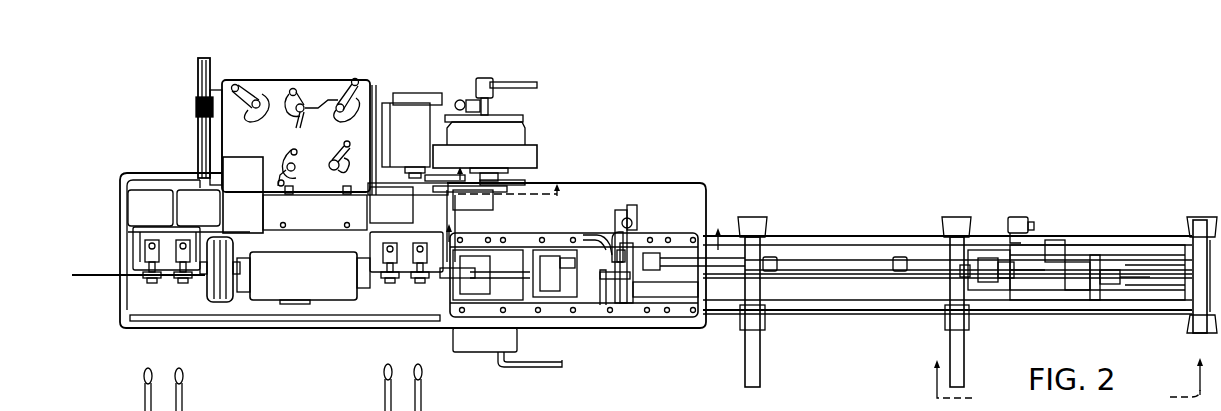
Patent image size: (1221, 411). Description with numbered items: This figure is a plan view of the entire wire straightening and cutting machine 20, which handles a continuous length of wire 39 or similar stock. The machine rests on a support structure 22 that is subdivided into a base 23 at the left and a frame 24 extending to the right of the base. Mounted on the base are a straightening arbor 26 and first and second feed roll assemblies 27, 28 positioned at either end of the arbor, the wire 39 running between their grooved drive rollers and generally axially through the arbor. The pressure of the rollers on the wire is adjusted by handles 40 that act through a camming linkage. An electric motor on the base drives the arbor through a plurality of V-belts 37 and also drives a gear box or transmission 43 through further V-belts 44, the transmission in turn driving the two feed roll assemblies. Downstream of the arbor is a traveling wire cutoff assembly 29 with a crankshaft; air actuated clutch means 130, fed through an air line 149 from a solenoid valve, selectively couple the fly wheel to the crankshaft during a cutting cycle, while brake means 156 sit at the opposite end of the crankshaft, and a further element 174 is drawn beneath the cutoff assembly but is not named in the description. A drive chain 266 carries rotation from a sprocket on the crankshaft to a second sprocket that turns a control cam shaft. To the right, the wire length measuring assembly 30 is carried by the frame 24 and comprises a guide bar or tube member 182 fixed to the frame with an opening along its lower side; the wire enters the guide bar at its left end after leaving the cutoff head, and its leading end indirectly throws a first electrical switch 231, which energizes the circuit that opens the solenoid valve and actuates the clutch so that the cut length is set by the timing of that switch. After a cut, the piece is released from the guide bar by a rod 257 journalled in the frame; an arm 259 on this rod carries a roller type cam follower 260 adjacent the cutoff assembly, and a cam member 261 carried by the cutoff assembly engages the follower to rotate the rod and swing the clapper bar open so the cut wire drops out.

The machine 20 is at (730, 156).
The support structure 22 is at (687, 328).
The base 23 is at (318, 330).
The frame 24 is at (955, 352).
The straightening arbor 26 is at (263, 292).
The first feed roll assembly 27 is at (140, 262).
The second feed roll assembly 28 is at (378, 255).
The traveling wire cutoff assembly 29 is at (527, 300).
The wire length measuring assembly 30 is at (980, 268).
The V-belts 37 is at (207, 296).
The wire 39 is at (97, 277).
The handles 40 is at (178, 372).
The gear box or transmission 43 is at (274, 85).
The V-belts 44 is at (198, 133).
The air actuated clutch means 130 is at (582, 115).
The air line 149 is at (522, 82).
The brake means 156 is at (487, 350).
The pipe 174 is at (543, 365).
The guide bar or tube member 182 is at (820, 277).
The first electrical switch 231 is at (1016, 217).
The rod 257 is at (845, 262).
The arm 259 is at (608, 230).
The roller type cam follower 260 is at (620, 228).
The cam member 261 is at (588, 233).
The drive chain 266 is at (505, 185).